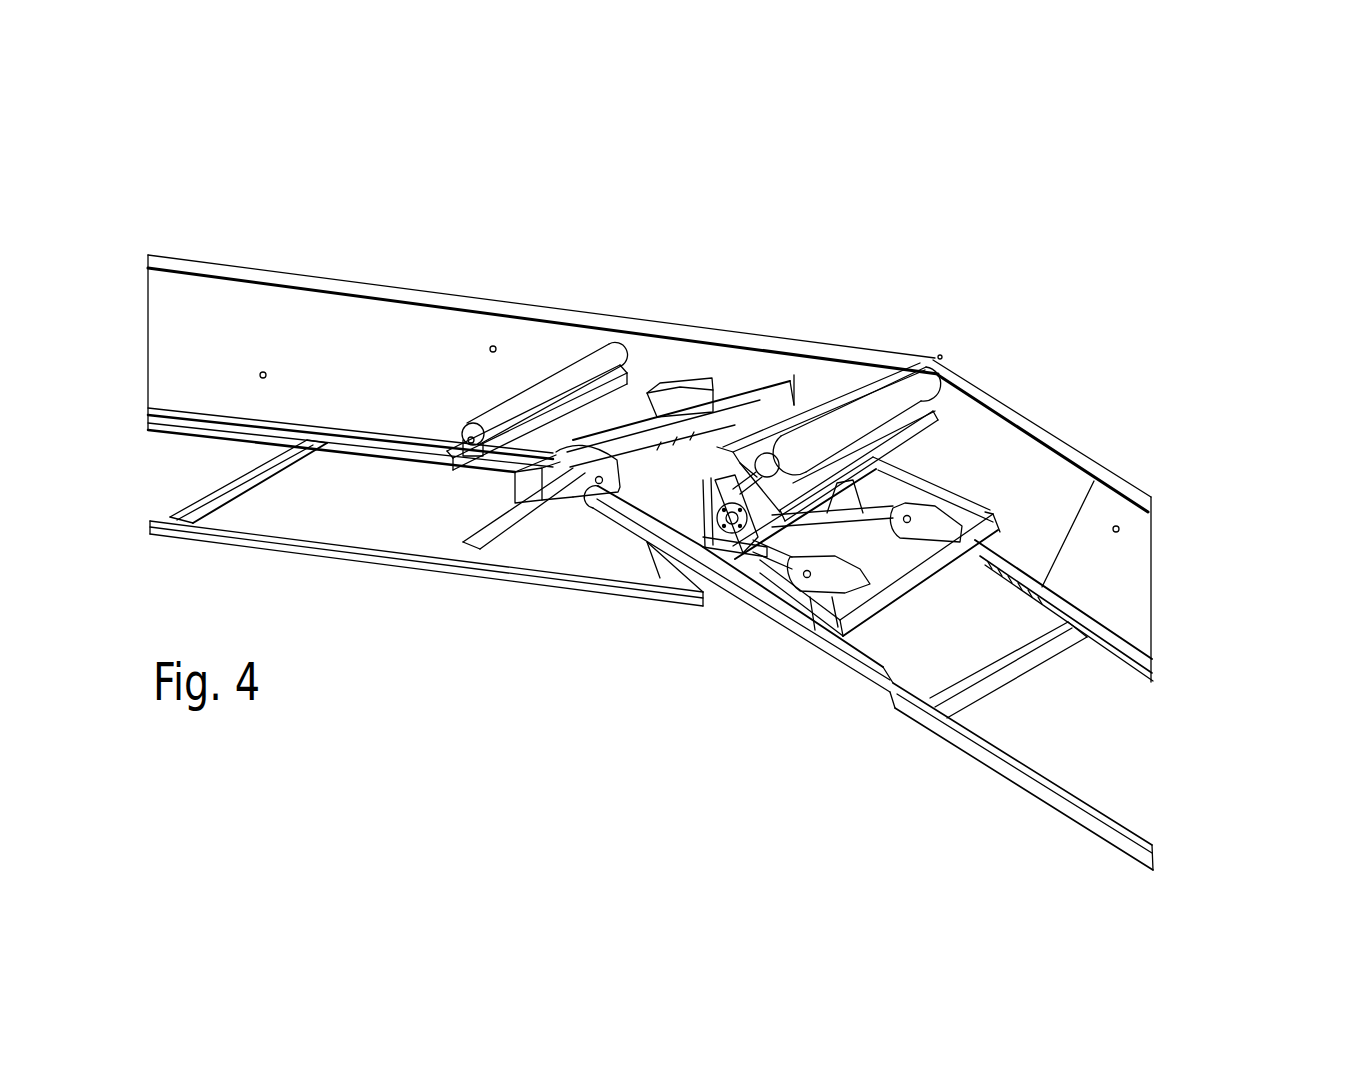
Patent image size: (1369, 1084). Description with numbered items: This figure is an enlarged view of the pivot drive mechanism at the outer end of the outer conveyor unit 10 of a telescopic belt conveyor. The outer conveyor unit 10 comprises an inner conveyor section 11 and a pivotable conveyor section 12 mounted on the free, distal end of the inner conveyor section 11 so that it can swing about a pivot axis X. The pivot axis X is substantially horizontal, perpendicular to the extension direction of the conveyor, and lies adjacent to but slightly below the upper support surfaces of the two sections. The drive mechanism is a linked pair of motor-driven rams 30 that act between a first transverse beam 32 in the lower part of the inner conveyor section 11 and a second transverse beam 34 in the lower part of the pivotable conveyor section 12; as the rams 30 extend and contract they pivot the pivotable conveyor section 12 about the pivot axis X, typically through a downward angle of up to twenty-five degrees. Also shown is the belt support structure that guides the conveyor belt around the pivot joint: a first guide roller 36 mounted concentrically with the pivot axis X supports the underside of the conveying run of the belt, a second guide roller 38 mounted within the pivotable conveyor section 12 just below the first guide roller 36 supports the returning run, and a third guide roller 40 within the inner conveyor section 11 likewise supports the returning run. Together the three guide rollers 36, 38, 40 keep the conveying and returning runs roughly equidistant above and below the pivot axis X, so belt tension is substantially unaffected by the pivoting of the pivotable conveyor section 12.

The outer conveyor unit 10 is at (262, 312).
The inner conveyor section 11 is at (410, 337).
The pivotable conveyor section 12 is at (1130, 575).
The motor-driven rams 30 is at (777, 557).
The first transverse beam 32 is at (550, 490).
The second transverse beam 34 is at (908, 583).
The first guide roller 36 is at (892, 393).
The second guide roller 38 is at (935, 412).
The third guide roller 40 is at (583, 370).
The pivot axis X is at (940, 357).